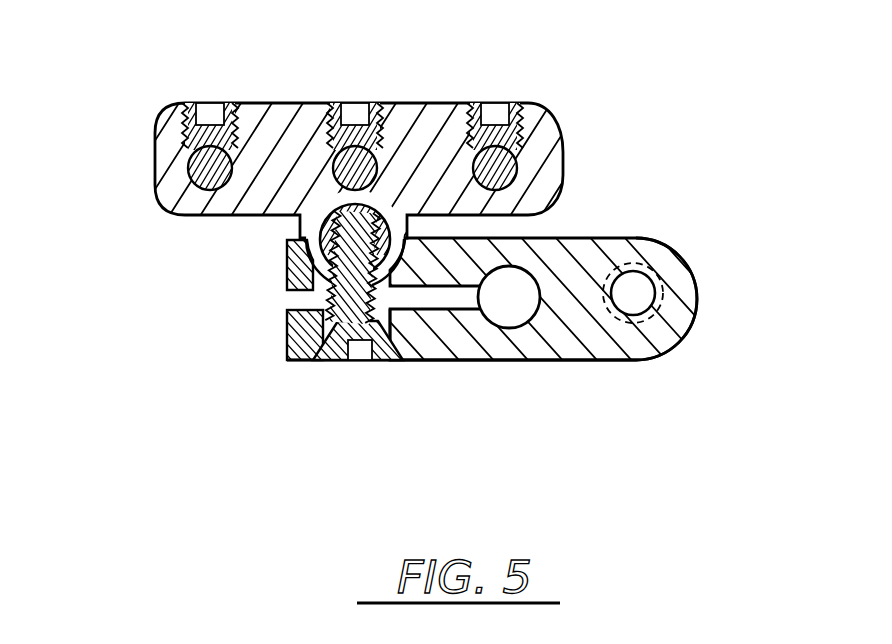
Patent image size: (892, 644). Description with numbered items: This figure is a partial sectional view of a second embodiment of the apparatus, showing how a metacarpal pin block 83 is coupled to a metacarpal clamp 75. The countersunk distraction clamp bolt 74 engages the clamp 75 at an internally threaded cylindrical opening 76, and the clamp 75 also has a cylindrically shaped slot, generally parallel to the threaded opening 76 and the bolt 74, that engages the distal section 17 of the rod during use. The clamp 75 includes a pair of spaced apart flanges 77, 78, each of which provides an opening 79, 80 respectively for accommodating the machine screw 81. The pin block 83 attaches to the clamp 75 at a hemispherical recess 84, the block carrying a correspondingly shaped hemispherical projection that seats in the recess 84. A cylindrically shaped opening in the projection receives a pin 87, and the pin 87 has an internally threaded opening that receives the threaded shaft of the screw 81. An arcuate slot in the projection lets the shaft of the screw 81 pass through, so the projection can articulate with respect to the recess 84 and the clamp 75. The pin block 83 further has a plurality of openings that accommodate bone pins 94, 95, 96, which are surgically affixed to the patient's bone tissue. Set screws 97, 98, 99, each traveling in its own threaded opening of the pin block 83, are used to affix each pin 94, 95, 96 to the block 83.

The distal section 17 is at (509, 300).
The countersunk distraction clamp bolt 74 is at (633, 300).
The metacarpal clamp 75 is at (675, 252).
The internally threaded cylindrical opening 76 is at (665, 290).
The flange 77 is at (468, 362).
The flange 78 is at (533, 238).
The opening 79 is at (287, 335).
The opening 80 is at (332, 292).
The machine screw 81 is at (386, 362).
The metacarpal pin block 83 is at (168, 110).
The hemispherical recess 84 is at (287, 265).
The pin 87 is at (343, 207).
The bone pin 94 is at (205, 190).
The bone pin 95 is at (316, 185).
The bone pin 96 is at (520, 170).
The set screw 97 is at (212, 100).
The set screw 98 is at (383, 102).
The set screw 99 is at (513, 102).